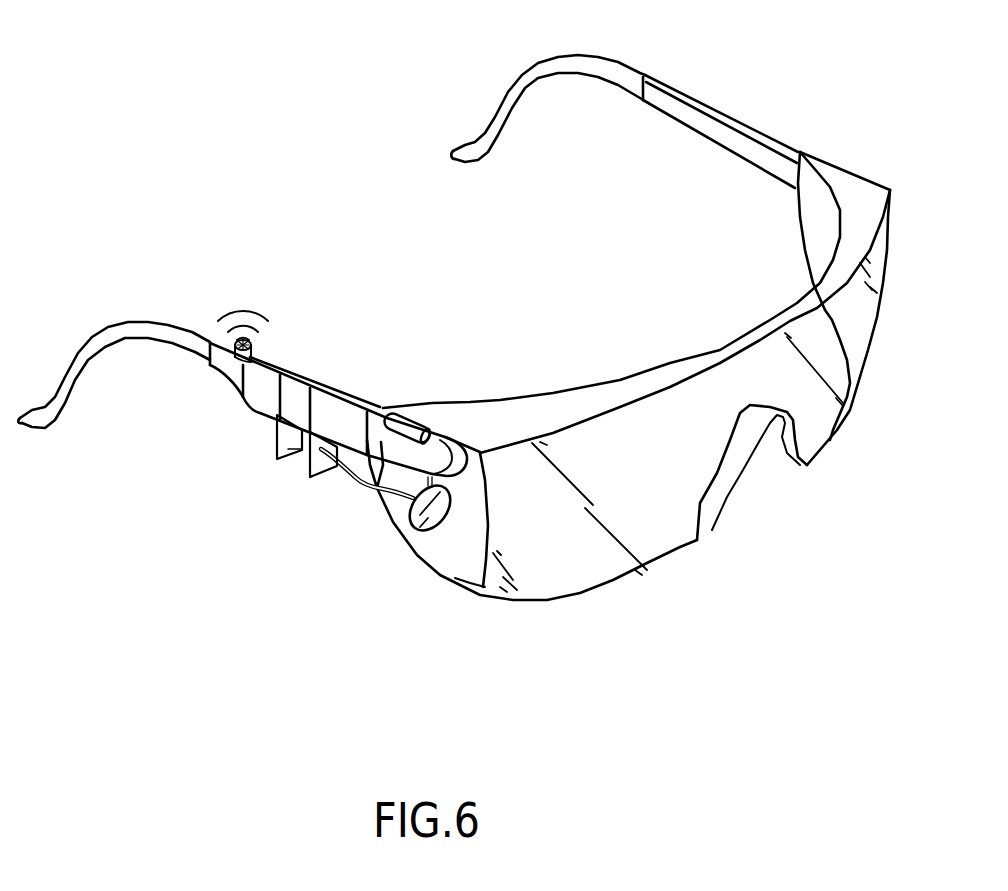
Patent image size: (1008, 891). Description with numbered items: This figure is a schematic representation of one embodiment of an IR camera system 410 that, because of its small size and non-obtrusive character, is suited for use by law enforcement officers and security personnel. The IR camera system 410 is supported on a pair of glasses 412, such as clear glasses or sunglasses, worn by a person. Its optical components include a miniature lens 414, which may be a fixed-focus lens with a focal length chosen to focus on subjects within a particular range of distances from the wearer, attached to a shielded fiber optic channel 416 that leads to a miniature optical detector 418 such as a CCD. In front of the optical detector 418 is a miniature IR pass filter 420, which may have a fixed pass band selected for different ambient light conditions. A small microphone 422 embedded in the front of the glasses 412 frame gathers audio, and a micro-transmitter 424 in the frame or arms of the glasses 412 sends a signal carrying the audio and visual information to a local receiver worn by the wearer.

The IR camera system 410 is at (307, 613).
The pair of glasses 412 is at (683, 487).
The miniature lens 414 is at (440, 510).
The shielded fiber optic channel 416 is at (358, 486).
The miniature optical detector 418 is at (277, 459).
The IR pass filter 420 is at (312, 478).
The microphone 422 is at (410, 427).
The micro-transmitter 424 is at (251, 353).